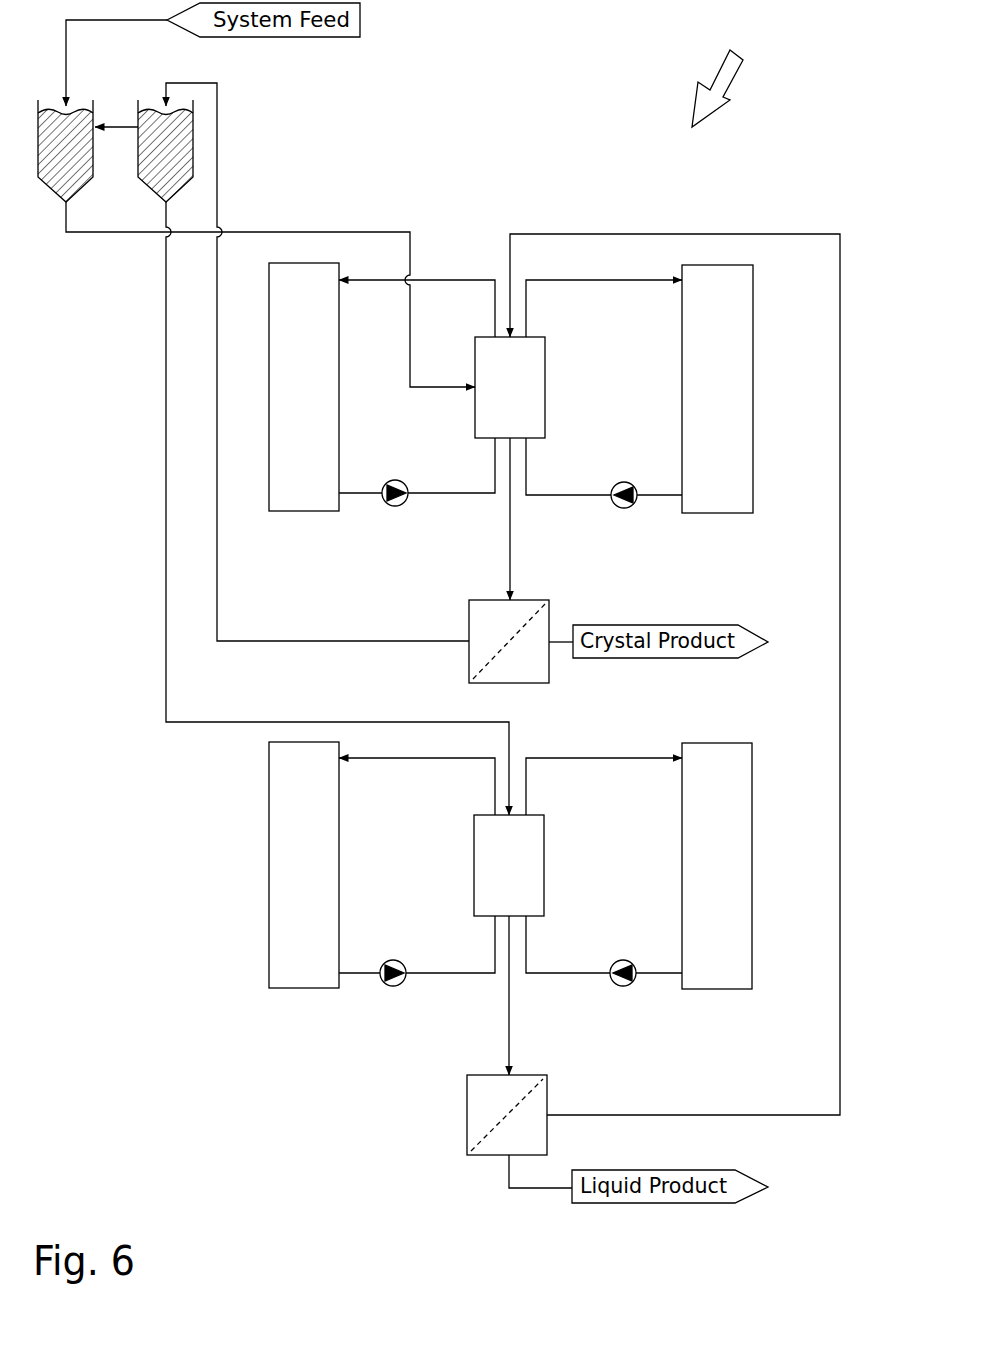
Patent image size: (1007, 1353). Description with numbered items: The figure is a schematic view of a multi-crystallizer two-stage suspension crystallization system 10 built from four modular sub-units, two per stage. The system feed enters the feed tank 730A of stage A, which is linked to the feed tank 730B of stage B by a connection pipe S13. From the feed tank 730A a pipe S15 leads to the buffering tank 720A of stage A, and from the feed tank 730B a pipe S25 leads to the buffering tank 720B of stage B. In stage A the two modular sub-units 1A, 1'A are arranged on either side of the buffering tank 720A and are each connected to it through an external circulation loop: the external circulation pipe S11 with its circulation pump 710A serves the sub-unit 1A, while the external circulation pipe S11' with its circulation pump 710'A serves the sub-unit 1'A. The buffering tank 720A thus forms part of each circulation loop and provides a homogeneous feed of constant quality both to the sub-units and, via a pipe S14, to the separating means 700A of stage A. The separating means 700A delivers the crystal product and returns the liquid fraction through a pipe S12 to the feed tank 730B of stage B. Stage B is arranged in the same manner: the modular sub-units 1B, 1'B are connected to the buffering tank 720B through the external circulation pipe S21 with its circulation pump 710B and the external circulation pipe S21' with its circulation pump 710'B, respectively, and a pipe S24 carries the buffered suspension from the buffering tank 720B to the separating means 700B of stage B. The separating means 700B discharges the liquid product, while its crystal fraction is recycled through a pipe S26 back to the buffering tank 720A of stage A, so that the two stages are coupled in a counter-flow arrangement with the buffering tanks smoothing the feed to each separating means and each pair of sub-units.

The crystallization system 10 is at (735, 67).
The feed tank 730A is at (82, 180).
The feed tank 730B is at (173, 180).
The connection pipe S13 is at (107, 125).
The pipe S15 is at (342, 232).
The pipe S25 is at (342, 720).
The modular sub-unit 1A is at (303, 384).
The modular sub-unit 1'A is at (752, 389).
The buffering tank 720A is at (510, 387).
The external circulation pipe S11 is at (451, 465).
The external circulation pipe S11' is at (570, 466).
The circulation pump 710A is at (395, 507).
The circulation pump 710'A is at (604, 508).
The pipe S14 is at (510, 561).
The separating means 700A is at (537, 632).
The pipe S12 is at (217, 562).
The modular sub-unit 1B is at (303, 863).
The modular sub-unit 1'B is at (752, 866).
The buffering tank 720B is at (510, 865).
The external circulation pipe S21 is at (450, 944).
The external circulation pipe S21' is at (570, 944).
The circulation pump 710B is at (393, 986).
The circulation pump 710'B is at (604, 986).
The pipe S24 is at (509, 1038).
The separating means 700B is at (533, 1107).
The pipe S26 is at (840, 688).